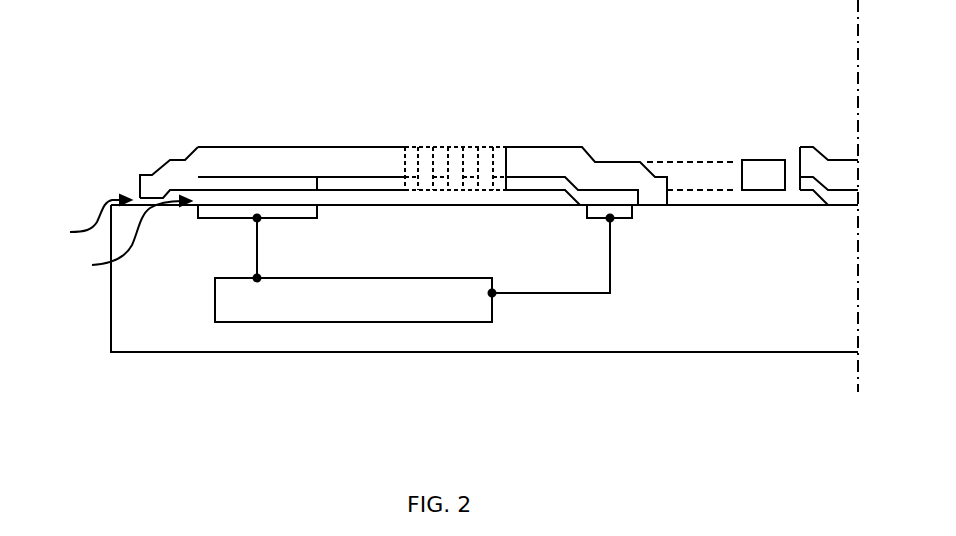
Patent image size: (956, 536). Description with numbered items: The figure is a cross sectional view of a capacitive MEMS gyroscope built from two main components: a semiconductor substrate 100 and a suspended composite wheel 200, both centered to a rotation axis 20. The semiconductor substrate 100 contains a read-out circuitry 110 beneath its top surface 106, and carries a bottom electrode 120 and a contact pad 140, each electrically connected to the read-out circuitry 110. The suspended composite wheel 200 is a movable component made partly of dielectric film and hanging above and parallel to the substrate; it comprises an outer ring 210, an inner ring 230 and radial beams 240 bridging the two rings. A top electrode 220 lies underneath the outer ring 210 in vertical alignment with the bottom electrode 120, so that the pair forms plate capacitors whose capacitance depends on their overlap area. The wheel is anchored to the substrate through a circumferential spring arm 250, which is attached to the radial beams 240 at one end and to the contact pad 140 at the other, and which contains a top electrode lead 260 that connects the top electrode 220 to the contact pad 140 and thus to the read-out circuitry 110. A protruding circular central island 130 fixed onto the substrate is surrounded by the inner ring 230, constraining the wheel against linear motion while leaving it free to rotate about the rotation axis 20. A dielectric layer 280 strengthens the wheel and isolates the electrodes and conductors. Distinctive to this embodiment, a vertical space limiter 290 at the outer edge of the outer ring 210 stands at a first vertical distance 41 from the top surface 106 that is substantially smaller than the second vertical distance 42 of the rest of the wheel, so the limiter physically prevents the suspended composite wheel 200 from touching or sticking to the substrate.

The rotation axis 20 is at (858, 33).
The first vertical distance 41 is at (88, 220).
The second vertical distance 42 is at (129, 238).
The semiconductor substrate 100 is at (724, 352).
The top surface 106 is at (688, 205).
The read-out circuitry 110 is at (410, 322).
The bottom electrode 120 is at (228, 220).
The protruding circular central island 130 is at (848, 165).
The contact pad 140 is at (622, 220).
The suspended composite wheel 200 is at (97, 132).
The outer ring 210 is at (317, 75).
The top electrode 220 is at (263, 187).
The inner ring 230 is at (787, 150).
The radial beams 240 is at (405, 133).
The circumferential spring arm 250 is at (668, 133).
The top electrode lead 260 is at (372, 184).
The dielectric layer 280 is at (307, 165).
The vertical space limiter 290 is at (152, 174).